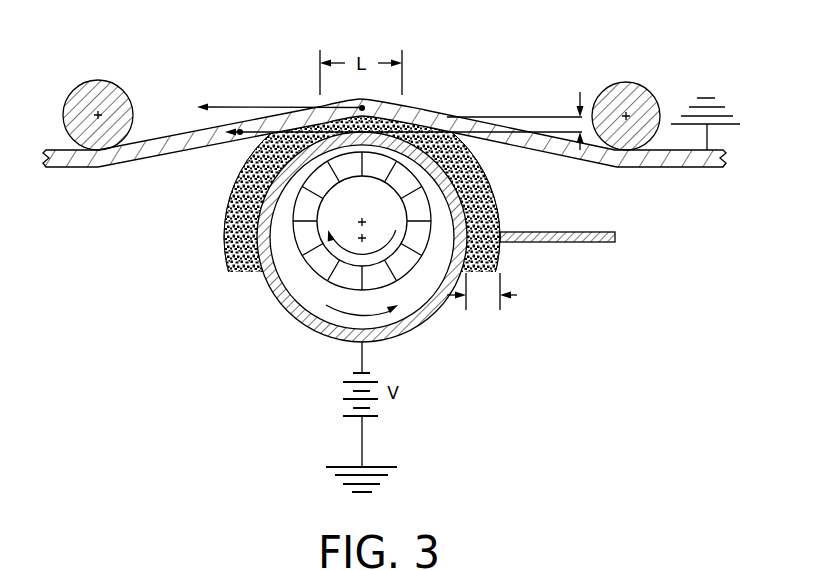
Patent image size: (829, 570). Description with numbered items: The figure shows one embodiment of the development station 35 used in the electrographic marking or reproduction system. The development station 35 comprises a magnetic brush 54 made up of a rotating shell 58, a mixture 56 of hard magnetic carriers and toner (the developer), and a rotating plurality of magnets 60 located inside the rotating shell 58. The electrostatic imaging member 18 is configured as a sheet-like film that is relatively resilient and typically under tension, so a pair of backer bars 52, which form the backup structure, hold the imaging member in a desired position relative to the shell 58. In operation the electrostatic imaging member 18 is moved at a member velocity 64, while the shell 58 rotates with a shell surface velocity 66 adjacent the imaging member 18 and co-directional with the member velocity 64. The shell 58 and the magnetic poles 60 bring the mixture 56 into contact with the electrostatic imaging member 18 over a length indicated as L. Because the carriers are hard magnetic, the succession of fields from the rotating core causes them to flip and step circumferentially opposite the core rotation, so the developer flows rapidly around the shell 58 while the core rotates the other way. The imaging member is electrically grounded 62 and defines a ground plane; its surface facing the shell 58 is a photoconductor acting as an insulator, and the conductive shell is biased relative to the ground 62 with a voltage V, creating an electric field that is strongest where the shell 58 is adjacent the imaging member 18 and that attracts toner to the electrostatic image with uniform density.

The electrostatic imaging member 18 is at (152, 140).
The development station 35 is at (150, 233).
The backer bars 52 is at (110, 92).
The magnetic brush 54 is at (492, 179).
The mixture of hard magnetic carriers and toner 56 is at (488, 202).
The rotating shell 58 is at (415, 320).
The rotating plurality of magnets 60 is at (302, 258).
The ground 62 is at (707, 138).
The member velocity 64 is at (250, 106).
The shell surface velocity 66 is at (310, 126).